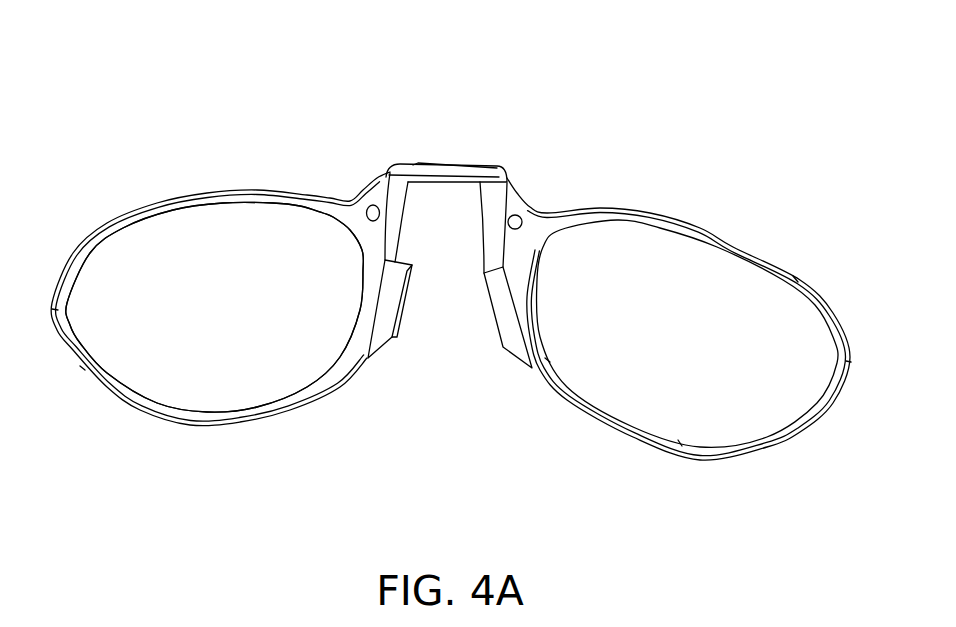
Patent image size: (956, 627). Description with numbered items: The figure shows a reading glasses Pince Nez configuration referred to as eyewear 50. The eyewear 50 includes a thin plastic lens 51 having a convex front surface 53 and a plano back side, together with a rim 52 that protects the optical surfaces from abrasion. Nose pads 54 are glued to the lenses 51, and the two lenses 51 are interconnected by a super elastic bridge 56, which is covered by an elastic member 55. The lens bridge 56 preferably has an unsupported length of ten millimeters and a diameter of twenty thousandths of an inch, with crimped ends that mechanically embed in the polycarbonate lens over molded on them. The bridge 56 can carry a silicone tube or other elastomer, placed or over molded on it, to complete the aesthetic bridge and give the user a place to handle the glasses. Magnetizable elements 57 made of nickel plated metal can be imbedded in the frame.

The eyewear 50 is at (453, 37).
The thin plastic lens 51 is at (168, 258).
The rim 52 is at (248, 200).
The convex front surface 53 is at (304, 208).
The nose pad 54 is at (398, 338).
The elastic member 55 is at (414, 164).
The super elastic bridge 56 is at (454, 168).
The magnetizable element 57 is at (520, 217).